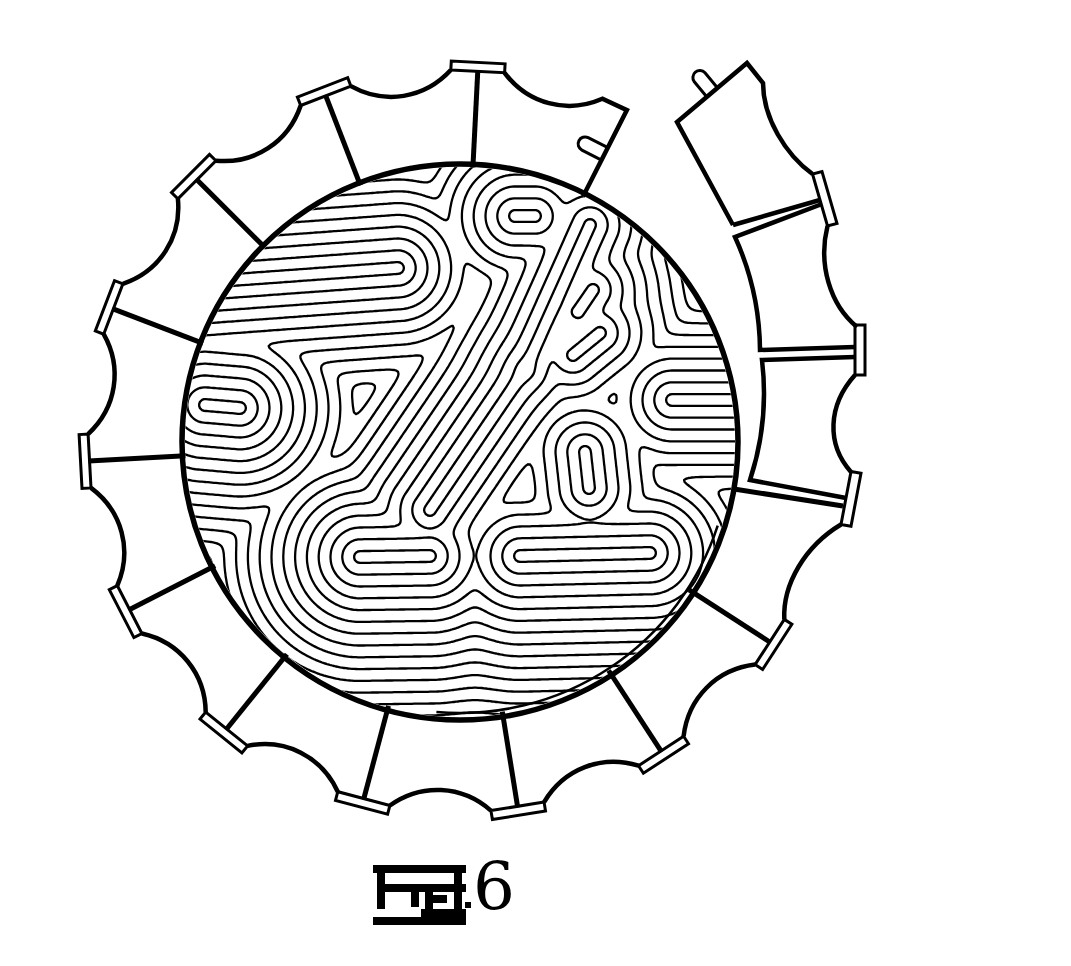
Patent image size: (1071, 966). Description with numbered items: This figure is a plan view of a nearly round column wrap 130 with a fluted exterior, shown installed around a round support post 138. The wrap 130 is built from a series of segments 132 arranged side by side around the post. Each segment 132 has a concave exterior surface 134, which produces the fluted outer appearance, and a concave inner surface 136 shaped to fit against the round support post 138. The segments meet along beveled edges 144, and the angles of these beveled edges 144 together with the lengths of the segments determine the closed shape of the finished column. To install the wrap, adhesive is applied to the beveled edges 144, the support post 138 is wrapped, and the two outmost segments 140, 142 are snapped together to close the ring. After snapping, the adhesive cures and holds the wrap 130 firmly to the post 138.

The column wrap 130 is at (518, 429).
The segment 132 is at (803, 427).
The concave exterior surface 134 is at (801, 572).
The concave inner surface 136 is at (717, 537).
The support post 138 is at (627, 298).
The outmost segment 140 is at (549, 130).
The outmost segment 142 is at (735, 145).
The beveled edge 144 is at (753, 223).